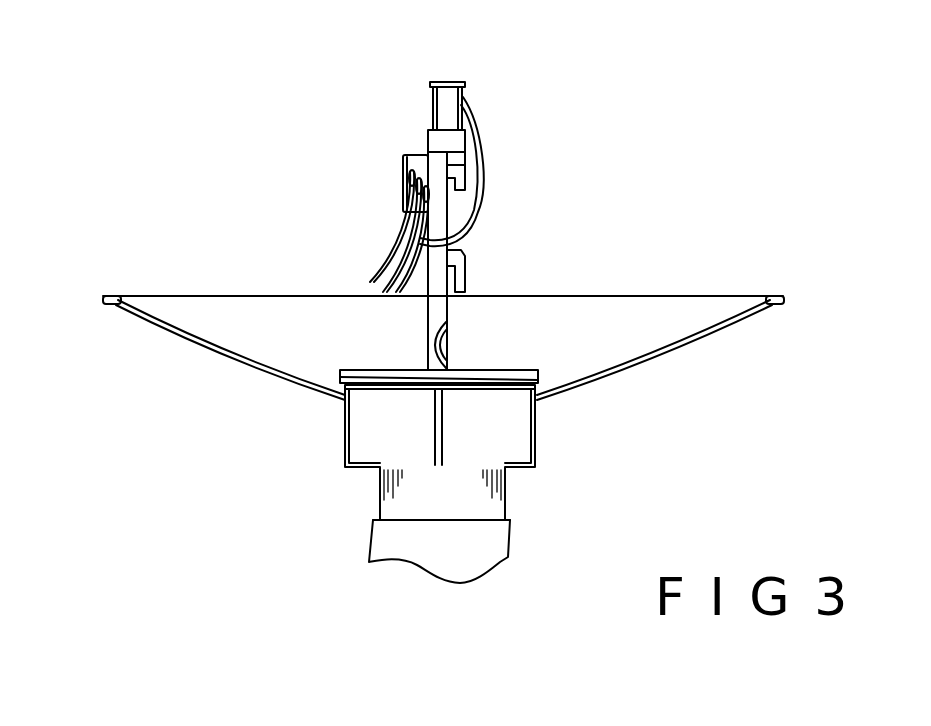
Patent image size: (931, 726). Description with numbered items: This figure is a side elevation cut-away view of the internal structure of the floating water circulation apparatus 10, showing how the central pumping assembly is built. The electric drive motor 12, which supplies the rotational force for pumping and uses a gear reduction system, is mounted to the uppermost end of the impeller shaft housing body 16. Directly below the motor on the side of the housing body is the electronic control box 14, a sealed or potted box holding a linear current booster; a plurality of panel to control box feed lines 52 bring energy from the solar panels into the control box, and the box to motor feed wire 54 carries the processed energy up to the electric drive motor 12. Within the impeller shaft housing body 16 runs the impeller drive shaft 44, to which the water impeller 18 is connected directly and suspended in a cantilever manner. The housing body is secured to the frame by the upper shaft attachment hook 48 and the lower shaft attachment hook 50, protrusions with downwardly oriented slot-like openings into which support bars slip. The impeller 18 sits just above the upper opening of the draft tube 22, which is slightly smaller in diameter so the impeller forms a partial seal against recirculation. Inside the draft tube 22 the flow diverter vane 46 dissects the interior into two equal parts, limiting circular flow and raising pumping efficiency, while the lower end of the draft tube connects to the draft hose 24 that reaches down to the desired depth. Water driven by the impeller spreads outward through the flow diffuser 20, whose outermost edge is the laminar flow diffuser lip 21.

The floating water circulation apparatus 10 is at (622, 454).
The electric drive motor 12 is at (468, 92).
The electronic control box 14 is at (407, 153).
The impeller shaft housing body 16 is at (466, 293).
The impeller 18 is at (328, 388).
The flow diffuser 20 is at (200, 353).
The laminar flow diffuser lip 21 is at (113, 305).
The draft tube 22 is at (345, 446).
The draft hose 24 is at (390, 547).
The impeller drive shaft 44 is at (448, 338).
The flow diverter vane 46 is at (448, 428).
The upper shaft attachment hook 48 is at (465, 183).
The lower shaft attachment hook 50 is at (470, 262).
The panel to control box feed lines 52 is at (402, 257).
The box to motor feed wire 54 is at (480, 145).